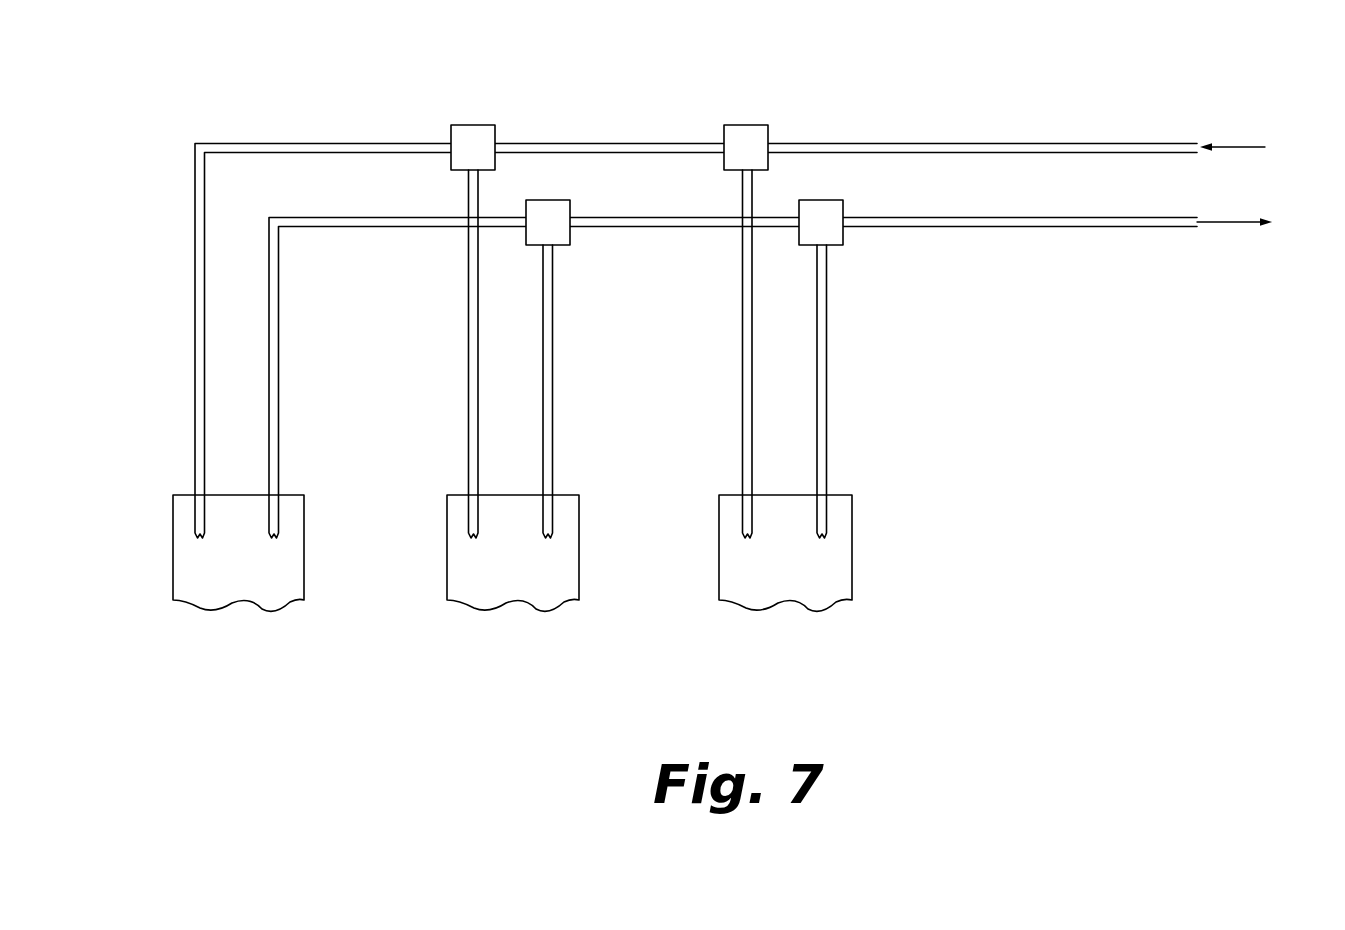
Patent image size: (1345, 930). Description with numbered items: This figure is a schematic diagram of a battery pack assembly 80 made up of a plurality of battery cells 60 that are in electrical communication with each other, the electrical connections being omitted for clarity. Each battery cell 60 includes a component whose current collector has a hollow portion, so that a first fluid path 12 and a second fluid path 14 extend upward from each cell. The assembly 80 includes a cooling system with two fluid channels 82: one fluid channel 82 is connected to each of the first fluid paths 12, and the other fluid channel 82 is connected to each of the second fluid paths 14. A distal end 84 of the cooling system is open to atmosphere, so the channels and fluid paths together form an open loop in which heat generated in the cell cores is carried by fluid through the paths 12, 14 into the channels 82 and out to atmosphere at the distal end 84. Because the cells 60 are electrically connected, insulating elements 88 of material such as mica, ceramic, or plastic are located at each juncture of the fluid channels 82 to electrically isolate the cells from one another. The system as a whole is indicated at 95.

The first fluid path 12 is at (190, 512).
The second fluid path 14 is at (282, 512).
The battery cell 60 is at (254, 576).
The battery pack assembly 80 is at (237, 125).
The fluid channel 82 is at (328, 232).
The distal end 84 is at (1278, 170).
The insulating element 88 is at (498, 125).
The system 95 is at (719, 312).